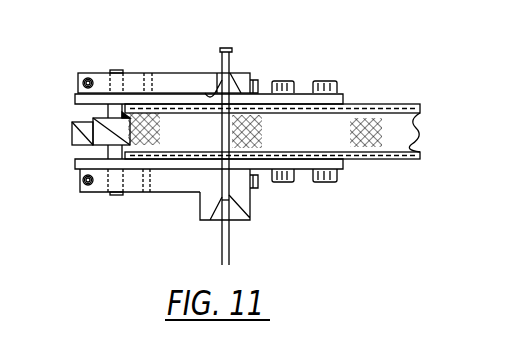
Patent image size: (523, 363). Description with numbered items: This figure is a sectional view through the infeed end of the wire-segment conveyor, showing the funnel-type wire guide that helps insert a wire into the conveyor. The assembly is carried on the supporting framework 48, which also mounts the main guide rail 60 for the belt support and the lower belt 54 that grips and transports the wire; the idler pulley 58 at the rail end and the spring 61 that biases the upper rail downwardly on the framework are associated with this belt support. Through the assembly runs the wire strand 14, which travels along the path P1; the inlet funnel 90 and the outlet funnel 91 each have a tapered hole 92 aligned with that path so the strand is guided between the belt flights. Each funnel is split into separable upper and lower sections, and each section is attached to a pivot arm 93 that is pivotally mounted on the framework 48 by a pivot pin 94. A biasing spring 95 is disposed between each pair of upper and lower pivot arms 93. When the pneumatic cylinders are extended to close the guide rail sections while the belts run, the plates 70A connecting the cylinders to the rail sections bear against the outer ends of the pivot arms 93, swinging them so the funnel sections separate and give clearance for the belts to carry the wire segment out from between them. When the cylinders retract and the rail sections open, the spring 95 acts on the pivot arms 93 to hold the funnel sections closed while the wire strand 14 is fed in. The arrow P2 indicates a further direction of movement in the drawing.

The wire strand 14 is at (221, 237).
The supporting framework 48 is at (72, 128).
The lower endless flexible belt 54 is at (373, 124).
The idler pulley 58 is at (180, 160).
The main guide rail 60 is at (412, 106).
The spring 61 is at (420, 160).
The plates 70A is at (303, 93).
The inlet funnel 90 is at (252, 208).
The outlet funnel 91 is at (252, 74).
The tapered hole 92 is at (207, 95).
The pivot arm 93 is at (79, 76).
The pivot pin 94 is at (118, 73).
The biasing spring 95 is at (86, 79).
The path of the wire strand P1 is at (240, 60).
The direction arrow P2 is at (385, 175).